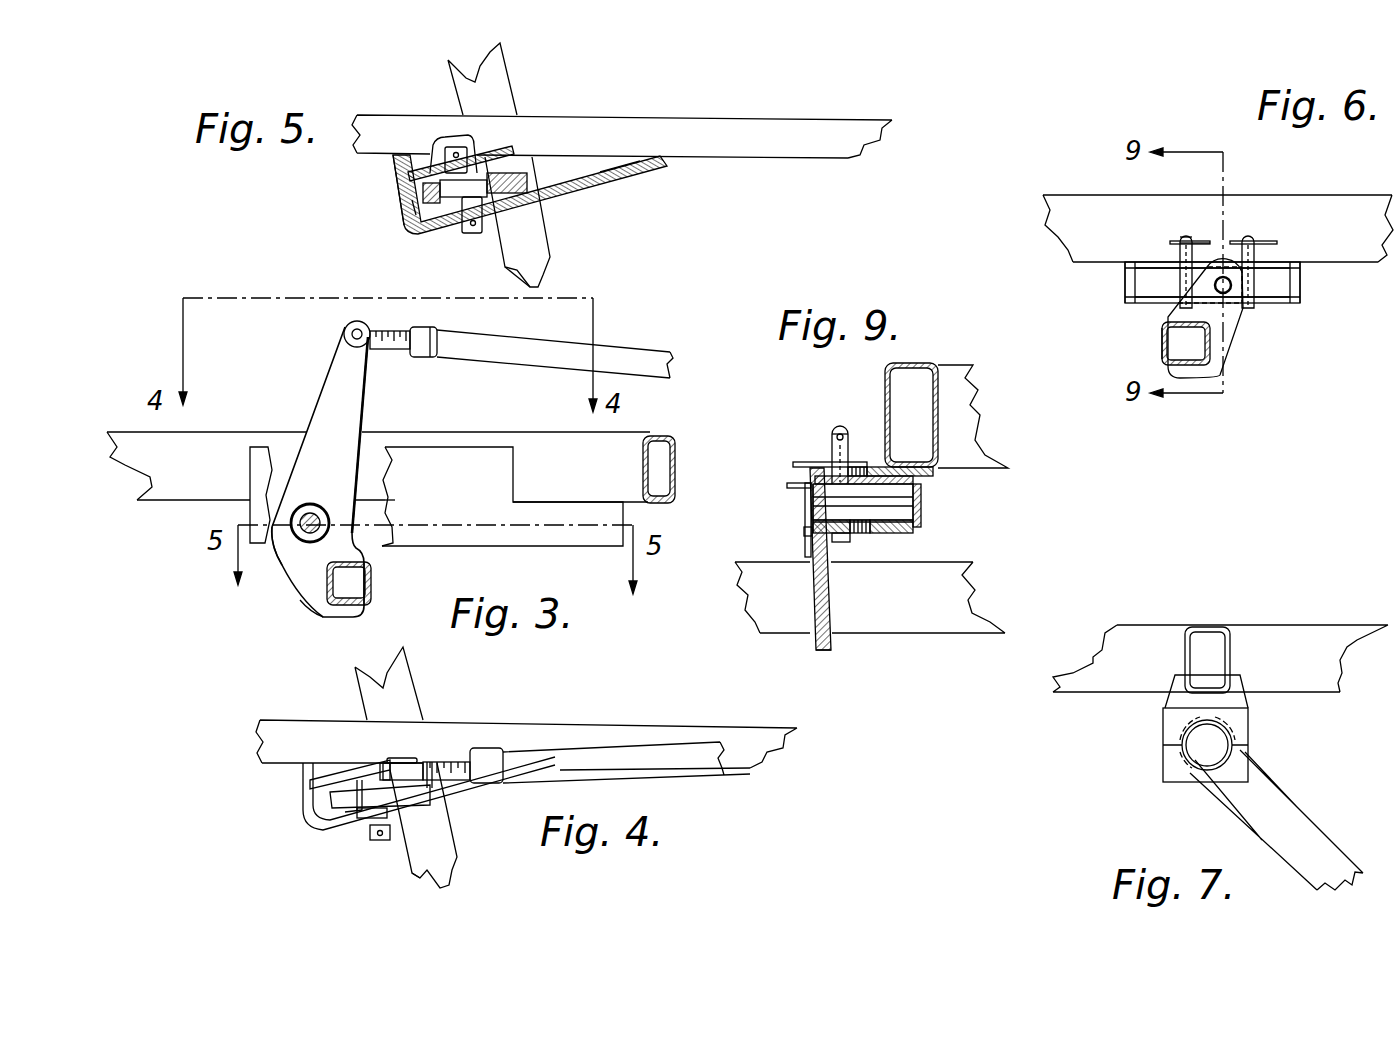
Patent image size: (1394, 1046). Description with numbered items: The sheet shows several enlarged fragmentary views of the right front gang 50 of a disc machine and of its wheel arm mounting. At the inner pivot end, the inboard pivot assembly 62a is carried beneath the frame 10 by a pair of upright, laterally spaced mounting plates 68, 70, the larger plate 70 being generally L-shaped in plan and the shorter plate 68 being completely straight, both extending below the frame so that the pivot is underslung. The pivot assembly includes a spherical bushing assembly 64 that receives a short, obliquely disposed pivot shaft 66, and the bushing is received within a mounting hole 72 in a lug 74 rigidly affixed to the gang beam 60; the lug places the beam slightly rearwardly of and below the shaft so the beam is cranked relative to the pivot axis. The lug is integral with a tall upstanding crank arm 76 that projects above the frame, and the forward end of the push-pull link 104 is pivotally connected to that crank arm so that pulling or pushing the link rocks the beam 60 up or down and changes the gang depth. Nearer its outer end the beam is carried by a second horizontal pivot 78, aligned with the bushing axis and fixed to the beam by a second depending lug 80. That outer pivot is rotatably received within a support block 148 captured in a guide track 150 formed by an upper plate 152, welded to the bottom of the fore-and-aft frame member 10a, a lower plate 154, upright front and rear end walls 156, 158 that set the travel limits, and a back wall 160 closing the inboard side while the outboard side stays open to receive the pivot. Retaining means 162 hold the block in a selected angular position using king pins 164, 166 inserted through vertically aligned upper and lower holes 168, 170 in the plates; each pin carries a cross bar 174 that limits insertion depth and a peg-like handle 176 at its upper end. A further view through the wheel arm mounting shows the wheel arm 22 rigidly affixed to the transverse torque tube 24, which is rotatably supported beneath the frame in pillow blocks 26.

In FIG. 5, the frame 10 is at (752, 100).
In FIG. 3, the frame 10 is at (462, 425).
In FIG. 4, the frame 10 is at (550, 700).
In FIG. 7, the frame 10 is at (1252, 608).
In FIG. 9, the fore-and-aft member 10a is at (885, 372).
In FIG. 6, the fore-and-aft member 10a is at (1280, 203).
In FIG. 7, the wheel arm 22 is at (1292, 845).
In FIG. 7, the torque tube 24 is at (1197, 752).
In FIG. 7, the pillow block 26 is at (1245, 722).
In FIG. 5, the right front gang 50 is at (530, 78).
In FIG. 3, the right front gang 50 is at (385, 590).
In FIG. 4, the right front gang 50 is at (438, 685).
In FIG. 9, the right front gang 50 is at (748, 545).
In FIG. 6, the right front gang 50 is at (1148, 340).
In FIG. 5, the beam 60 is at (530, 247).
In FIG. 3, the beam 60 is at (372, 567).
In FIG. 4, the beam 60 is at (445, 855).
In FIG. 9, the beam 60 is at (960, 607).
In FIG. 6, the beam 60 is at (1160, 345).
In FIG. 5, the inboard pivot assembly 62a is at (422, 211).
In FIG. 3, the inboard pivot assembly 62a is at (284, 548).
In FIG. 4, the inboard pivot assembly 62a is at (352, 825).
In FIG. 5, the spherical bushing assembly 64 is at (470, 160).
In FIG. 3, the spherical bushing assembly 64 is at (313, 533).
In FIG. 4, the spherical bushing assembly 64 is at (372, 767).
In FIG. 5, the pivot shaft 66 is at (470, 228).
In FIG. 3, the pivot shaft 66 is at (310, 505).
In FIG. 4, the pivot shaft 66 is at (392, 826).
In FIG. 5, the mounting plate 68 is at (433, 170).
In FIG. 3, the mounting plate 68 is at (383, 518).
In FIG. 4, the mounting plate 68 is at (340, 778).
In FIG. 5, the mounting plate 70 is at (663, 157).
In FIG. 3, the mounting plate 70 is at (493, 482).
In FIG. 4, the mounting plate 70 is at (320, 830).
In FIG. 5, the mounting hole 72 is at (407, 177).
In FIG. 3, the mounting hole 72 is at (288, 505).
In FIG. 5, the lug 74 is at (600, 166).
In FIG. 3, the lug 74 is at (318, 603).
In FIG. 3, the crank arm 76 is at (338, 392).
In FIG. 4, the crank arm 76 is at (345, 802).
In FIG. 9, the second horizontal pivot 78 is at (905, 500).
In FIG. 9, the second depending lug 80 is at (825, 620).
In FIG. 6, the second depending lug 80 is at (1228, 325).
In FIG. 3, the push-pull link 104 is at (623, 357).
In FIG. 4, the push-pull link 104 is at (630, 750).
In FIG. 9, the support block 148 is at (868, 534).
In FIG. 9, the guide track 150 is at (788, 543).
In FIG. 6, the guide track 150 is at (1112, 290).
In FIG. 9, the upper plate 152 is at (905, 468).
In FIG. 6, the upper plate 152 is at (1160, 262).
In FIG. 9, the lower plate 154 is at (905, 531).
In FIG. 6, the lower plate 154 is at (1165, 300).
In FIG. 6, the front end wall 156 is at (1295, 285).
In FIG. 6, the rear end wall 158 is at (1127, 278).
In FIG. 9, the back wall 160 is at (905, 518).
In FIG. 9, the retaining means 162 is at (822, 420).
In FIG. 6, the retaining means 162 is at (1168, 226).
In FIG. 9, the king pin 164 is at (839, 428).
In FIG. 6, the king pin 164 is at (1178, 258).
In FIG. 6, the king pin 166 is at (1256, 258).
In FIG. 9, the upper hole 168 is at (862, 465).
In FIG. 9, the lower hole 170 is at (855, 543).
In FIG. 9, the cross bar 174 is at (793, 465).
In FIG. 6, the handle 176 is at (1205, 243).